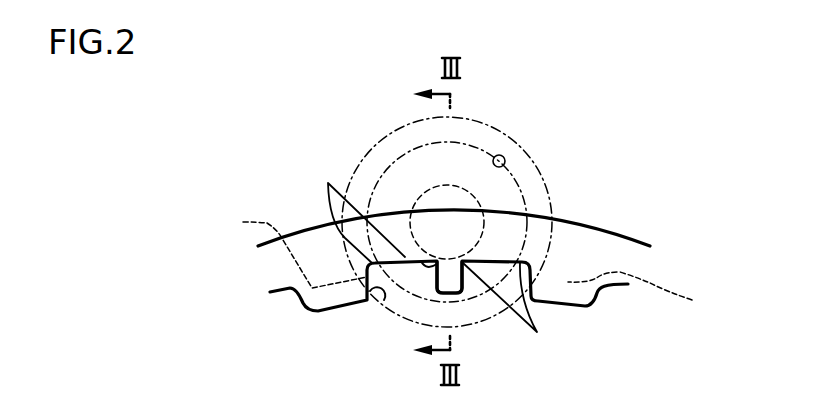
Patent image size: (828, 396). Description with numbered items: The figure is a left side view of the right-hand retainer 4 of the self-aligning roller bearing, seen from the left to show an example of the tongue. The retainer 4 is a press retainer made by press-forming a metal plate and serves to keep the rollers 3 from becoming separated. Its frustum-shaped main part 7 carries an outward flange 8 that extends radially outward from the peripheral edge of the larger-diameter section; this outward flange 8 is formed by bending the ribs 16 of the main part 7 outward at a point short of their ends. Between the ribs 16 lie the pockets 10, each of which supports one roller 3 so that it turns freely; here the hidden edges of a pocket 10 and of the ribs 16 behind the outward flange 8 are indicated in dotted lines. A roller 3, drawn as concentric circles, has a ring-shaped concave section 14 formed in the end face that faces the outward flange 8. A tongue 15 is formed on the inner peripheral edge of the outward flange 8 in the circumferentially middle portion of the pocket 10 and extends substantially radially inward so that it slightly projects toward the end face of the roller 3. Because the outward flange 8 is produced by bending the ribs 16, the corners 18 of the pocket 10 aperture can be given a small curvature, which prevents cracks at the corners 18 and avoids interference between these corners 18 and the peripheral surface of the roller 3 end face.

The roller 3 is at (543, 178).
The retainer 4 is at (615, 248).
The main part 7 is at (535, 280).
The outward flange 8 is at (572, 236).
The pocket 10 is at (385, 303).
The annular concave section 14 is at (504, 156).
The tongue 15 is at (462, 293).
The rib 16 is at (468, 258).
The corner 18 is at (436, 253).